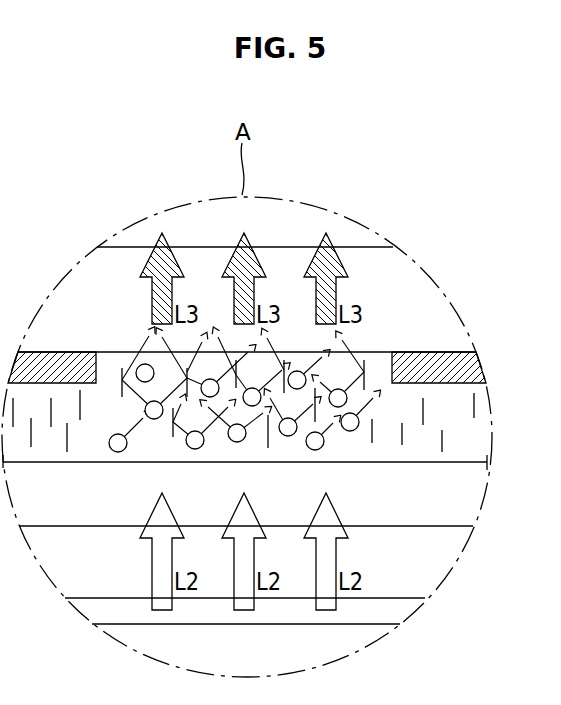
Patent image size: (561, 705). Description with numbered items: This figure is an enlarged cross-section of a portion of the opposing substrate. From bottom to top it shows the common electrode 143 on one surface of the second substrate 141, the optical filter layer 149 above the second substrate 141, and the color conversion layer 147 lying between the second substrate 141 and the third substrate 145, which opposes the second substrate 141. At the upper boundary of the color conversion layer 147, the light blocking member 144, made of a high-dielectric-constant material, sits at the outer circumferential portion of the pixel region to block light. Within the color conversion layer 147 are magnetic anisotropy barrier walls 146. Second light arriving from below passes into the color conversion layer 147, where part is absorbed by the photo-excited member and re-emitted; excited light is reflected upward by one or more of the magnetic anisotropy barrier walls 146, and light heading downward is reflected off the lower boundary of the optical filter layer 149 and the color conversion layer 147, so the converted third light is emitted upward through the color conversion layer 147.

The second substrate 141 is at (435, 563).
The common electrode 143 is at (395, 613).
The light blocking member 144 is at (453, 368).
The third substrate 145 is at (428, 295).
The magnetic anisotropy barrier wall 146 is at (423, 409).
The color conversion layer 147 is at (457, 430).
The optical filter layer 149 is at (458, 492).